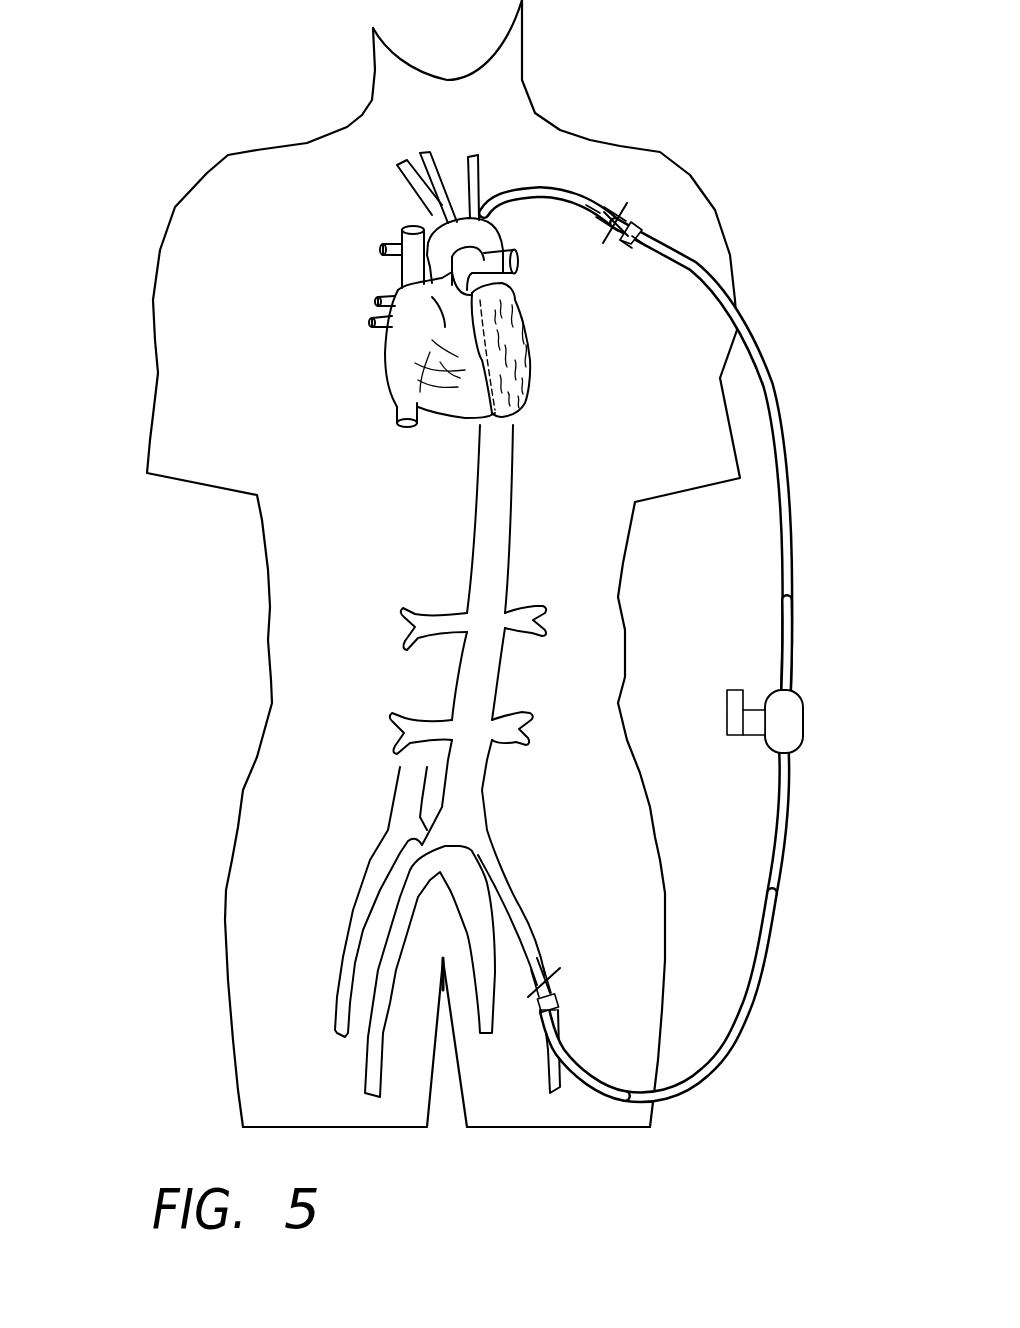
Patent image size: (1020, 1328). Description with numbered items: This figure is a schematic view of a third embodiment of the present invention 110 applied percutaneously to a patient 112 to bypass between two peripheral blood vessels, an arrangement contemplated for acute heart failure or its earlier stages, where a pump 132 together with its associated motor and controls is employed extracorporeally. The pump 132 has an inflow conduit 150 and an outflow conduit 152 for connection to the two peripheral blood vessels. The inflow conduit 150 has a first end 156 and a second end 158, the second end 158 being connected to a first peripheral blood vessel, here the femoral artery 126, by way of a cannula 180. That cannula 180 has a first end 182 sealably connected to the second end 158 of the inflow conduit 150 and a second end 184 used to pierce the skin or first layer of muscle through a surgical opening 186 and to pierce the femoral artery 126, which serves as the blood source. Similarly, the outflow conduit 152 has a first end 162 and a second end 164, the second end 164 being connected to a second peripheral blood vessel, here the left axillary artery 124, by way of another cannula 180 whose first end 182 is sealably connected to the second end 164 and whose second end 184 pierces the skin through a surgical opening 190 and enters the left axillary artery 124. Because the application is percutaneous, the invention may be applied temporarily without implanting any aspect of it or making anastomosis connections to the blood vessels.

The third embodiment of the present invention 110 is at (815, 810).
The patient 112 is at (210, 155).
The left axillary artery 124 is at (557, 190).
The femoral artery 126 is at (543, 1042).
The pump 132 is at (803, 708).
The inflow conduit 150 is at (739, 1032).
The outflow conduit 152 is at (757, 427).
The first end of the inflow conduit 156 is at (793, 781).
The second end of the inflow conduit 158 is at (614, 1087).
The first end of the outflow conduit 162 is at (780, 655).
The second end of the outflow conduit 164 is at (643, 227).
The cannula 180 is at (622, 252).
The first end of the cannula 182 is at (620, 242).
The second end of the cannula 184 is at (608, 208).
The surgical opening 186 is at (560, 973).
The surgical opening 190 is at (600, 213).